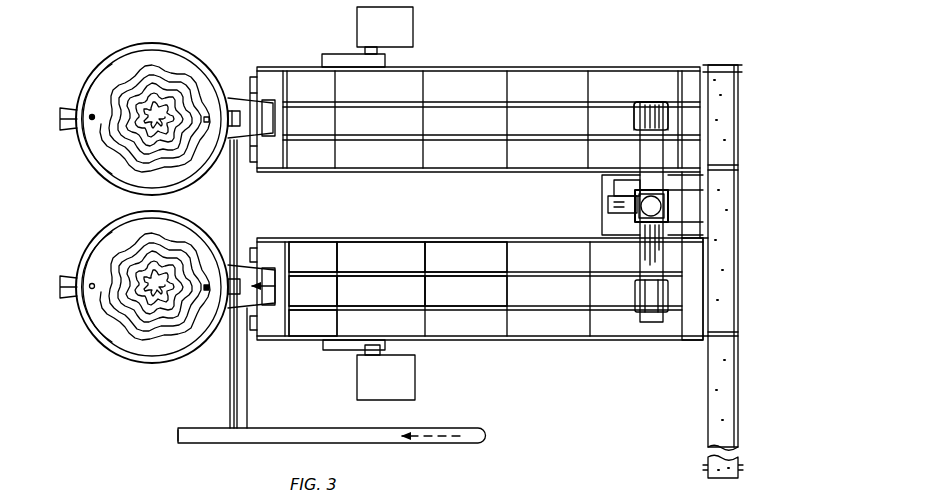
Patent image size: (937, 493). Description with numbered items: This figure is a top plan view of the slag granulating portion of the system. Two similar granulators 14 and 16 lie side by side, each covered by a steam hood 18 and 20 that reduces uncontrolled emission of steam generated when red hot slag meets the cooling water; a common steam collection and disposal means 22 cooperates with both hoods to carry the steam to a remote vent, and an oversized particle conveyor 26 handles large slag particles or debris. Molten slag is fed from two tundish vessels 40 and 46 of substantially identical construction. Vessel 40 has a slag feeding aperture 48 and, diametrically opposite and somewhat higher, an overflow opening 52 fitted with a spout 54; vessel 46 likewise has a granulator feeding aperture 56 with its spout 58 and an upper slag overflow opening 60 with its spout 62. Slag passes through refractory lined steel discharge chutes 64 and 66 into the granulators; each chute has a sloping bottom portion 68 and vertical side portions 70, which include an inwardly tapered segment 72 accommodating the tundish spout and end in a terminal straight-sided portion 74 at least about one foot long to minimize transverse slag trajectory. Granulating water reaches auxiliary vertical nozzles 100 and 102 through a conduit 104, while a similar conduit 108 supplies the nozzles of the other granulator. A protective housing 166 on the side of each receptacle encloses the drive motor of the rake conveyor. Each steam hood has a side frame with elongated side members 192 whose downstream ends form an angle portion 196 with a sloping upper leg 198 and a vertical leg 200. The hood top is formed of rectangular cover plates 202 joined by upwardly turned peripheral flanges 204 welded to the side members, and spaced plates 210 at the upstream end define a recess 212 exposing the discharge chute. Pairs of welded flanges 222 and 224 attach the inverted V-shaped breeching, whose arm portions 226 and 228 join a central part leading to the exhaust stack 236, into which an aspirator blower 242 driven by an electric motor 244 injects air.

The granulator 14 is at (516, 342).
The granulator 16 is at (530, 66).
The steam hood 18 is at (484, 256).
The steam hood 20 is at (642, 94).
The steam collection and disposal means 22 is at (598, 224).
The oversized particle conveyor 26 is at (724, 400).
The auxiliary slag receiving vessel 40 is at (164, 364).
The auxiliary slag receiving vessel 46 is at (184, 44).
The slag feeding aperture 48 is at (207, 291).
The overflow opening 52 is at (92, 289).
The spout 54 is at (65, 300).
The granulator feeding aperture 56 is at (208, 116).
The spout 58 is at (242, 118).
The upper slag overflow opening 60 is at (92, 114).
The spout 62 is at (68, 108).
The discharge chute 64 is at (300, 297).
The discharge chute 66 is at (233, 92).
The sloping bottom portion 68 is at (242, 140).
The vertical side portion 70 is at (241, 262).
The inwardly tapered segment 72 is at (262, 284).
The terminal straight-sided portion 74 is at (268, 136).
The auxiliary vertical nozzle 100 is at (262, 312).
The auxiliary vertical nozzle 102 is at (260, 270).
The conduit 104 is at (332, 419).
The conduit 108 is at (191, 418).
The protective housing 166 is at (392, 388).
The side member 192 is at (460, 235).
The angle portion 196 is at (692, 300).
The sloping upper leg 198 is at (690, 240).
The vertical leg 200 is at (690, 343).
The cover plate 202 is at (432, 258).
The peripheral flange 204 is at (500, 288).
The plate 210 is at (287, 253).
The recess 212 is at (310, 272).
The welded flange 222 is at (648, 314).
The welded flange 224 is at (638, 102).
The arm portion 226 is at (648, 290).
The arm portion 228 is at (650, 121).
The exhaust stack 236 is at (666, 204).
The blower 242 is at (612, 203).
The electric motor 244 is at (620, 182).